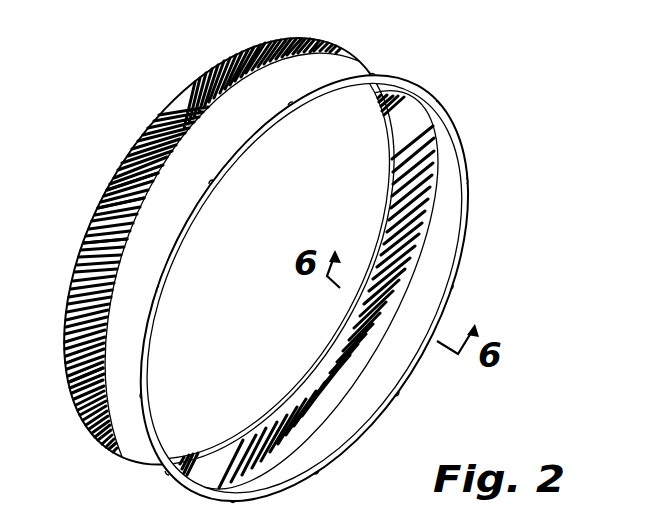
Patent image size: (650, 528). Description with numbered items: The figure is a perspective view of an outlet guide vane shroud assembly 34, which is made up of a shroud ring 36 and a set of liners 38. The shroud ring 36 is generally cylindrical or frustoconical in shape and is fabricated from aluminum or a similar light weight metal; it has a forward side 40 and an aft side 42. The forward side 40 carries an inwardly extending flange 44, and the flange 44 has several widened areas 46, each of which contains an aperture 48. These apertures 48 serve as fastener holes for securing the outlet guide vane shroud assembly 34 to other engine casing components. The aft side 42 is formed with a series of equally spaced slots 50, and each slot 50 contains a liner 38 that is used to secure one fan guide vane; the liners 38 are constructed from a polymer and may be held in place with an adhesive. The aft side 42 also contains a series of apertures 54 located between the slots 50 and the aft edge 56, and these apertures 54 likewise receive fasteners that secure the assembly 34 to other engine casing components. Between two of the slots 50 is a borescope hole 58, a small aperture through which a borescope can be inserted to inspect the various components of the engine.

The outlet guide vane shroud assembly 34 is at (513, 179).
The shroud ring 36 is at (333, 72).
The liners 38 is at (203, 95).
The forward side 40 is at (150, 278).
The aft side 42 is at (70, 274).
The flange 44 is at (148, 397).
The widened areas 46 is at (155, 324).
The aperture 48 is at (153, 342).
The slots 50 is at (110, 200).
The apertures 54 is at (118, 167).
The aft edge 56 is at (88, 244).
The borescope hole 58 is at (73, 366).